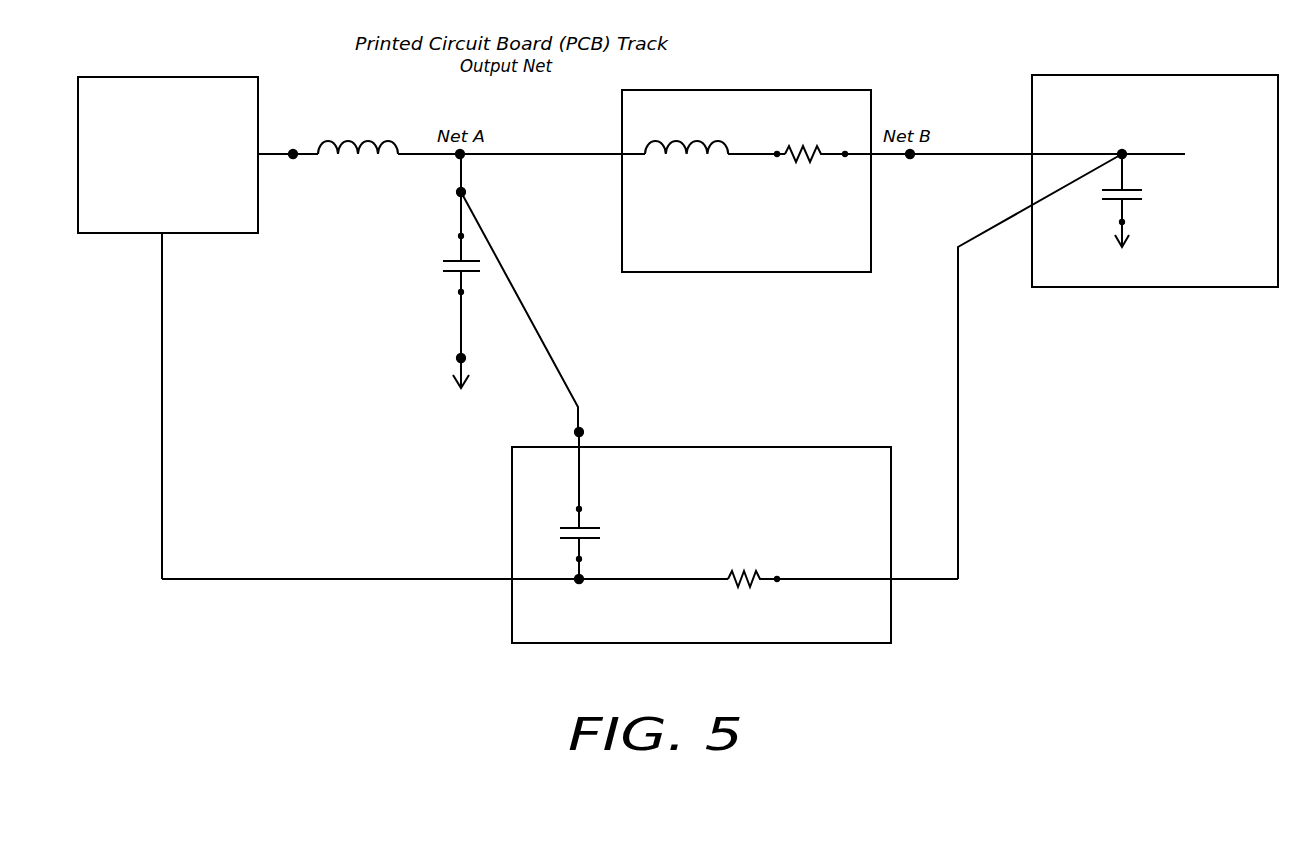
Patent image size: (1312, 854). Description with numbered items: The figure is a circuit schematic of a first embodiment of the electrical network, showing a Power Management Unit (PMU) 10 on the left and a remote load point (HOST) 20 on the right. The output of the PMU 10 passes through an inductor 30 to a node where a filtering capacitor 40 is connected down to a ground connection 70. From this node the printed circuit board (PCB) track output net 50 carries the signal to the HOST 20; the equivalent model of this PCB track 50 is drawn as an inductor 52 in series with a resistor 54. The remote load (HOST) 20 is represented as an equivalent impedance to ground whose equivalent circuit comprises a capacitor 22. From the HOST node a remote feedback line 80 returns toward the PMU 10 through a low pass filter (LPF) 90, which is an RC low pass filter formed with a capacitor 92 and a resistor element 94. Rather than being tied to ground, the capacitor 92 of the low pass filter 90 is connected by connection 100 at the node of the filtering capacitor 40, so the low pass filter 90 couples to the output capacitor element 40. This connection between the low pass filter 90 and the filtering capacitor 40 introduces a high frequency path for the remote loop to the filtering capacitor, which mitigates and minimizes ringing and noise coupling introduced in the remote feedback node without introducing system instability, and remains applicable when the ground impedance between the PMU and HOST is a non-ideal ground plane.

The Power Management Unit (PMU) 10 is at (250, 110).
The remote load point (HOST) 20 is at (1118, 75).
The capacitor 22 is at (1146, 203).
The inductor 30 is at (378, 124).
The filtering capacitor 40 is at (487, 258).
The printed circuit board (PCB) track output net 50 is at (723, 90).
The inductor 52 is at (682, 158).
The resistor 54 is at (805, 173).
The ground connection 70 is at (438, 384).
The remote feedback line 80 is at (988, 470).
The low pass filter (LPF) 90 is at (897, 598).
The capacitor 92 is at (608, 528).
The resistor element 94 is at (750, 556).
The remote sense connection 100 is at (547, 347).